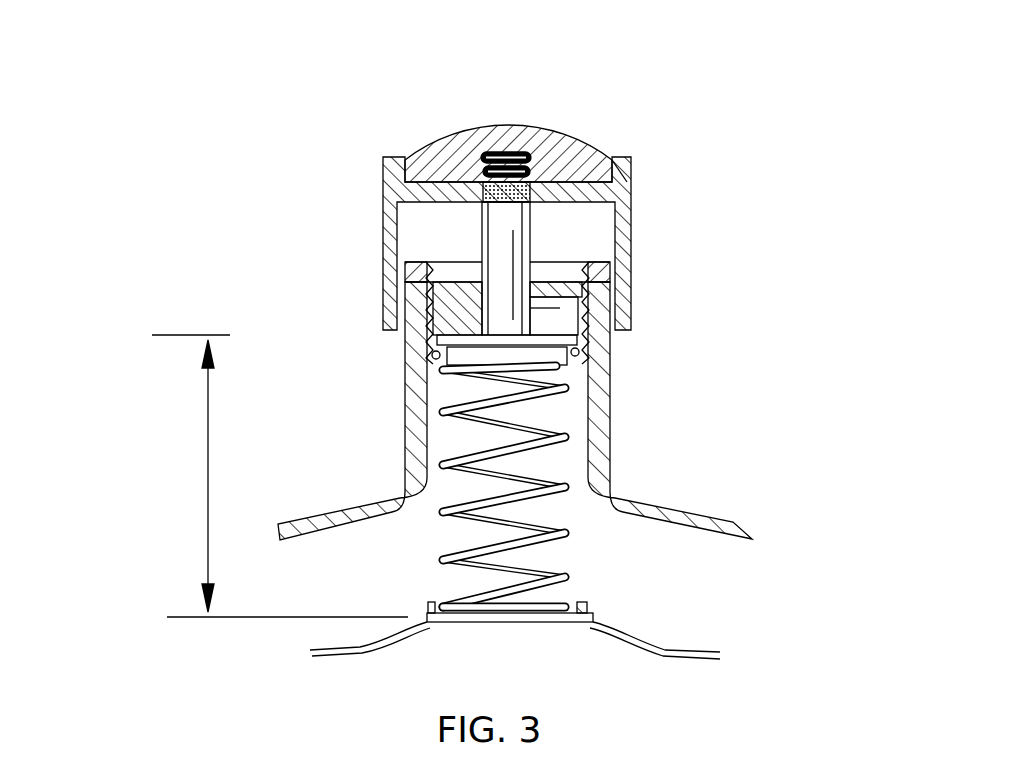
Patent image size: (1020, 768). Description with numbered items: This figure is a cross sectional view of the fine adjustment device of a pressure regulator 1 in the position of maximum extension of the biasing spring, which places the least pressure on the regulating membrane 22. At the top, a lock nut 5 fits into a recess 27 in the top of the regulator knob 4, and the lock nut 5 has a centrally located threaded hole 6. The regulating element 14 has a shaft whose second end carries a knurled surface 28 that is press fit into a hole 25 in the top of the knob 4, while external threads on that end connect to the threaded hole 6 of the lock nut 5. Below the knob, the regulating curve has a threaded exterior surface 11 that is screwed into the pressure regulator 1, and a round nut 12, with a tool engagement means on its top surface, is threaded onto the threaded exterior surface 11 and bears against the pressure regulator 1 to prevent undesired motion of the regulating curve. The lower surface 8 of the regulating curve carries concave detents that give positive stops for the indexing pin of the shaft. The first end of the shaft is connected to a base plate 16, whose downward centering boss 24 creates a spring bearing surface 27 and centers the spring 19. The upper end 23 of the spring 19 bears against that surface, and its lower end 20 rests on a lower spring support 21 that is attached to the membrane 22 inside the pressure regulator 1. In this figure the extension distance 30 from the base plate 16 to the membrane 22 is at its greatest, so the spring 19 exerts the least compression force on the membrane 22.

The pressure regulator 1 is at (337, 515).
The regulator knob 4 is at (380, 185).
The lock nut 5 is at (560, 130).
The centrally located threaded hole 6 is at (480, 163).
The lower surface 8 is at (432, 316).
The threaded exterior surface 11 is at (430, 293).
The round nut 12 is at (600, 262).
The regulating element 14 is at (530, 243).
The base plate 16 is at (580, 342).
The spring 19 is at (567, 487).
The lower end 20 is at (588, 603).
The lower spring support 21 is at (425, 605).
The membrane 22 is at (683, 643).
The upper end 23 is at (578, 353).
The centering boss 24 is at (438, 355).
The hole 25 is at (555, 165).
The recess 27 is at (627, 160).
The knurled surface 28 is at (481, 174).
The extension distance 30 is at (112, 467).